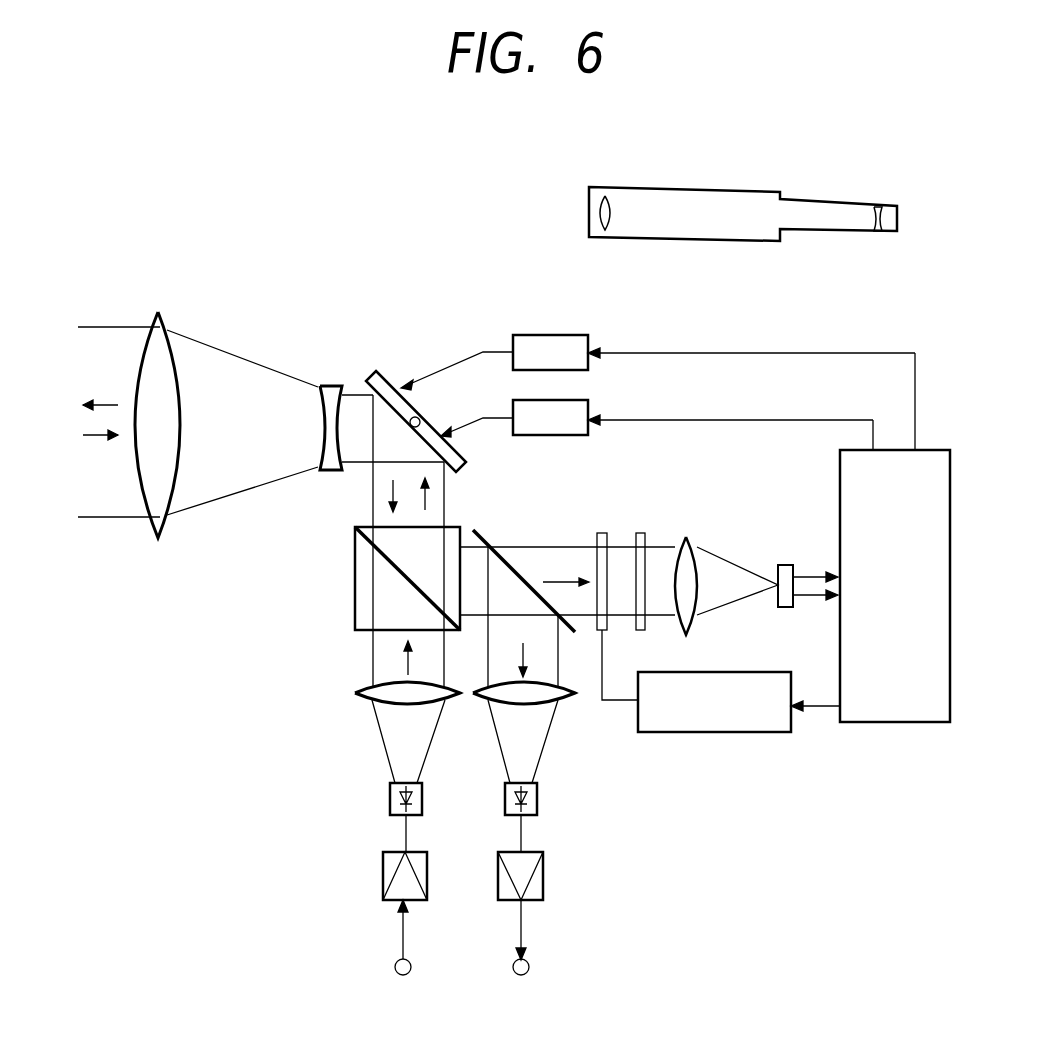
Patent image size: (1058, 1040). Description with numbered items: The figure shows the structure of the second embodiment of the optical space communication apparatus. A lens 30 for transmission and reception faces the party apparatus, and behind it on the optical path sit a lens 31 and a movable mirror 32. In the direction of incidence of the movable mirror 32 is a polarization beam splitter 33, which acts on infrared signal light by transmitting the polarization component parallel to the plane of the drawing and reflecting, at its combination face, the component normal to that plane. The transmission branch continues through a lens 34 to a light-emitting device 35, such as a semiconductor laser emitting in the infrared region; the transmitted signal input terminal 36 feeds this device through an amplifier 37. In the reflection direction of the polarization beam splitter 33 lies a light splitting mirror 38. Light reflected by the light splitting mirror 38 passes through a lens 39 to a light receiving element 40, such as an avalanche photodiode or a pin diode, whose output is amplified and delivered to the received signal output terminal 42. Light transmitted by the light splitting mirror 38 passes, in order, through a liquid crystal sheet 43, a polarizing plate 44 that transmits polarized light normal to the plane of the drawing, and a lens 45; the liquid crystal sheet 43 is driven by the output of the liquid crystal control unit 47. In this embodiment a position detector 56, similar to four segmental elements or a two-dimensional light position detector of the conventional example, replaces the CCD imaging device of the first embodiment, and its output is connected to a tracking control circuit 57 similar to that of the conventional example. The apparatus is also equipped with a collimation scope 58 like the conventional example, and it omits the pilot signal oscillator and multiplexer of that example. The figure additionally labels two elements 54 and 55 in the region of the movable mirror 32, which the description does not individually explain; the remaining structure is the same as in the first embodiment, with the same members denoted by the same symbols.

The lens for transmission and reception 30 is at (165, 316).
The lens 31 is at (332, 384).
The movable mirror 32 is at (394, 382).
The polarization beam splitter 33 is at (355, 552).
The lens 34 is at (356, 689).
The light-emitting device 35 is at (388, 792).
The transmitted signal input terminal 36 is at (395, 966).
The amplifier 37 is at (382, 862).
The light splitting mirror 38 is at (483, 535).
The lens 39 is at (566, 698).
The light receiving element 40 is at (538, 792).
The received signal output terminal 42 is at (530, 965).
The liquid crystal sheet 43 is at (600, 533).
The polarizing plate 44 is at (640, 533).
The lens 45 is at (688, 537).
The liquid crystal control unit 47 is at (762, 672).
The mirror drive actuator 54 is at (569, 335).
The mirror drive actuator 55 is at (540, 436).
The position detector 56 is at (785, 565).
The tracking control circuit 57 is at (935, 450).
The collimation scope 58 is at (747, 188).